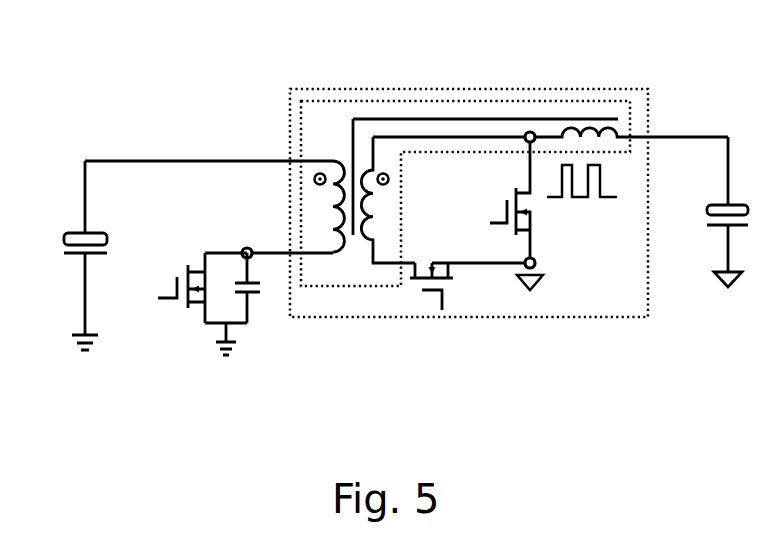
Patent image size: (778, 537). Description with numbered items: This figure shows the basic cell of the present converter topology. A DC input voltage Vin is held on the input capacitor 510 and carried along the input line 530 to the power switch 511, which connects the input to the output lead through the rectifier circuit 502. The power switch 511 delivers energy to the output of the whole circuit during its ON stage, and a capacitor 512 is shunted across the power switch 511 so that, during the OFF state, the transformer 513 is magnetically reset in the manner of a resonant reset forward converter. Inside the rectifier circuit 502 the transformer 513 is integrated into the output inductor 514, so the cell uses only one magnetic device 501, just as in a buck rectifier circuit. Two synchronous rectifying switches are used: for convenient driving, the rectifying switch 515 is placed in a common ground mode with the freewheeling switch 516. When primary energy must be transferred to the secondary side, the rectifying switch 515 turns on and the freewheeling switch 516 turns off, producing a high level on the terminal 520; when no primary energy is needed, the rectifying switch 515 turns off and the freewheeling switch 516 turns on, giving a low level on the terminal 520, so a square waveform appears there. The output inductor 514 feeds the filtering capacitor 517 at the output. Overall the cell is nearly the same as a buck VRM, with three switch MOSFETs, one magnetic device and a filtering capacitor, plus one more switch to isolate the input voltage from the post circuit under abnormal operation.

The magnetic device 501 is at (370, 102).
The rectifier circuit 502 is at (375, 85).
The input capacitor 510 is at (61, 255).
The power switch 511 is at (194, 304).
The capacitor 512 is at (283, 240).
The transformer 513 is at (467, 191).
The output inductor 514 is at (602, 125).
The rectifying switch 515 is at (467, 286).
The freewheeling switch 516 is at (537, 216).
The filtering capacitor 517 is at (705, 212).
The terminal 520 is at (531, 131).
The input line 530 is at (85, 161).